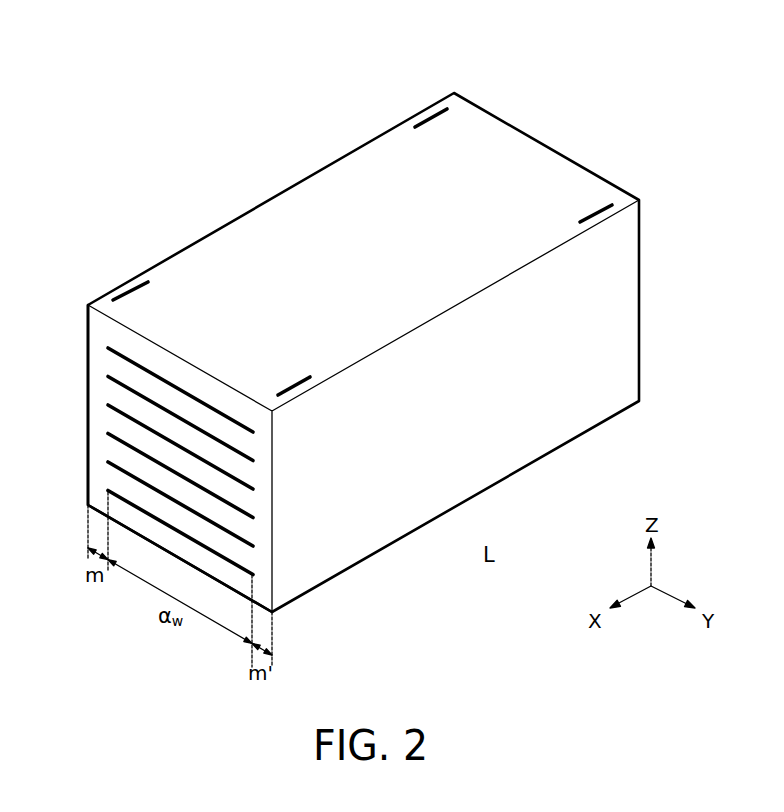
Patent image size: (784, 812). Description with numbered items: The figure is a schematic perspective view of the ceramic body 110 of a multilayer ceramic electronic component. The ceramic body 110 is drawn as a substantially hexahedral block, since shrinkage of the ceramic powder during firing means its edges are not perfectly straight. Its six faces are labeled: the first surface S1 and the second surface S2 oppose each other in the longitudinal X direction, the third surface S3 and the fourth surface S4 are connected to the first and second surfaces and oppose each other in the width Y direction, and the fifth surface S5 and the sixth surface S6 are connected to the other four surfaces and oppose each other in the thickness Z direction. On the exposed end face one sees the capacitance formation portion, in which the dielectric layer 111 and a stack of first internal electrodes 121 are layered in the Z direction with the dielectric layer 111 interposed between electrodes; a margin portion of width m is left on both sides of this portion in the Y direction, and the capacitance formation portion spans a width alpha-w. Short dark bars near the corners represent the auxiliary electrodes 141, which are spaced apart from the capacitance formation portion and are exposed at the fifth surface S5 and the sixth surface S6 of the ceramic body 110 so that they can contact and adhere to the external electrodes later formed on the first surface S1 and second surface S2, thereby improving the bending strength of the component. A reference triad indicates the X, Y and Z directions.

The ceramic body 110 is at (159, 45).
The dielectric layer 111 is at (97, 392).
The first internal electrode 121 is at (108, 349).
The auxiliary electrode 141 is at (128, 292).
The first surface S1 is at (185, 461).
The second surface S2 is at (565, 144).
The third surface S3 is at (520, 442).
The fourth surface S4 is at (199, 231).
The fifth surface S5 is at (378, 180).
The sixth surface S6 is at (402, 548).